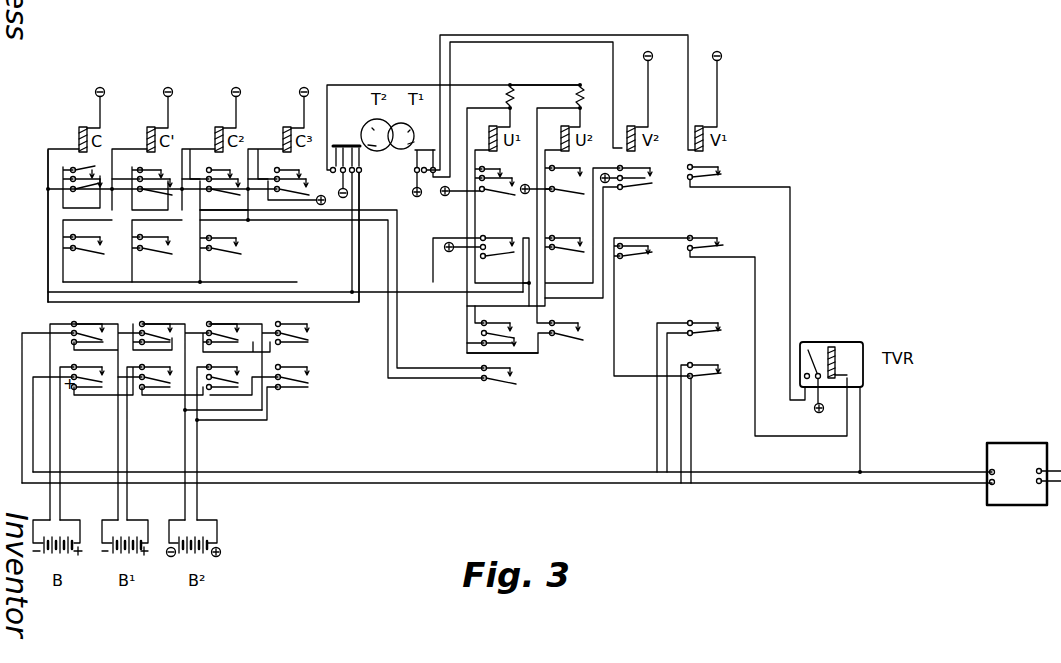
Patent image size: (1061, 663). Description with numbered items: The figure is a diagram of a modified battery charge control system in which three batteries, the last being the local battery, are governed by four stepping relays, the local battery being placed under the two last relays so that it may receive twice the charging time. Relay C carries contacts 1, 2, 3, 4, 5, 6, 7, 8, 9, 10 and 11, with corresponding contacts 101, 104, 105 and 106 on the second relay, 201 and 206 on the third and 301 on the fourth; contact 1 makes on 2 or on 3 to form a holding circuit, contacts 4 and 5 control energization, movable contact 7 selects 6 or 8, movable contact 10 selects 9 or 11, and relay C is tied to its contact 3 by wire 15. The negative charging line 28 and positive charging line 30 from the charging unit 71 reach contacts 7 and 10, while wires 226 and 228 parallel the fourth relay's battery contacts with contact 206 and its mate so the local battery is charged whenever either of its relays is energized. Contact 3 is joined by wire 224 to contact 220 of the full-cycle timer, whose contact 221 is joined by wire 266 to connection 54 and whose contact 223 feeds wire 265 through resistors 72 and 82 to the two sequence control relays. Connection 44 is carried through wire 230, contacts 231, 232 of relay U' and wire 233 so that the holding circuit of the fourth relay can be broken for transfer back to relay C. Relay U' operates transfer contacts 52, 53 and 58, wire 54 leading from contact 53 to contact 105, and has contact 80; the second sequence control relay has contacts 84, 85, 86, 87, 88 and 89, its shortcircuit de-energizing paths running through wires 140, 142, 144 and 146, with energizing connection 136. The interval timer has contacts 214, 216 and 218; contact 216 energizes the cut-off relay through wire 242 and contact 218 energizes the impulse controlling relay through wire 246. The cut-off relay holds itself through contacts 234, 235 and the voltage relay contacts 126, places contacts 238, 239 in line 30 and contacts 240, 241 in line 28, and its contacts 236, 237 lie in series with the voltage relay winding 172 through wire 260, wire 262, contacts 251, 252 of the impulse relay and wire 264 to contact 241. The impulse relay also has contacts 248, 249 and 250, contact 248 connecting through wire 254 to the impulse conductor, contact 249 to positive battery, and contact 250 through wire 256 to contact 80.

The wire 15 is at (48, 161).
The contact 1 is at (83, 164).
The contact 2 is at (79, 192).
The movable contact 3 is at (94, 192).
The energization control contact 4 is at (98, 237).
The energization control contact 5 is at (102, 253).
The contact 101 is at (147, 167).
The contact 104 is at (159, 238).
The contact 105 is at (163, 256).
The contact 201 is at (215, 167).
The contact 301 is at (299, 163).
The wire 224 is at (48, 242).
The connection 44 is at (248, 223).
The wire 230 is at (333, 221).
The wire 266 is at (337, 248).
The wire 54 is at (297, 282).
The contact 223 is at (338, 140).
The contact 220 is at (358, 157).
The contact 214 is at (416, 172).
The contact 221 is at (360, 178).
The contact 216 is at (420, 150).
The contact 218 is at (433, 150).
The resistor 72 is at (514, 96).
The resistor 82 is at (584, 96).
The wire 265 is at (546, 83).
The wire 140 is at (471, 106).
The wire 144 is at (542, 106).
The wire 246 is at (617, 55).
The wire 242 is at (694, 47).
The contact 84 is at (576, 167).
The contact 85 is at (584, 196).
The upper fixed contact 52 is at (500, 234).
The movable contact 58 is at (506, 232).
The lower fixed contact 53 is at (504, 258).
The contact 86 is at (563, 232).
The contact 87 is at (578, 255).
The wire 142 is at (534, 277).
The energizing connection 136 is at (472, 322).
The contact 80 is at (470, 335).
The contact 88 is at (580, 320).
The contact 89 is at (574, 340).
The wire 146 is at (528, 354).
The wire 233 is at (413, 368).
The contact 232 is at (524, 374).
The contact 231 is at (510, 392).
The wire 254 is at (606, 165).
The contact 248 is at (645, 165).
The contact 249 is at (655, 184).
The contact 250 is at (637, 192).
The contact 234 is at (718, 164).
The contact 235 is at (724, 175).
The wire 264 is at (618, 296).
The contact 251 is at (650, 250).
The contact 252 is at (646, 258).
The wire 256 is at (607, 223).
The wire 262 is at (662, 236).
The contact 236 is at (708, 233).
The contact 237 is at (724, 246).
The wire 260 is at (793, 440).
The contact 238 is at (707, 318).
The contact 239 is at (710, 336).
The contact 240 is at (707, 362).
The contact 241 is at (707, 380).
The TVR contacts 126 is at (809, 349).
The TVR winding 172 is at (843, 345).
The positive charging line 30 is at (736, 468).
The negative charging line 28 is at (745, 485).
The voltage source 71 is at (1010, 500).
The contact 6 is at (91, 322).
The movable contact 7 is at (104, 325).
The contact 8 is at (102, 338).
The contact 9 is at (94, 364).
The movable contact 10 is at (106, 386).
The contact 11 is at (86, 390).
The contact 106 is at (153, 324).
The contact 206 is at (222, 324).
The wire 226 is at (280, 324).
The wire 228 is at (275, 409).